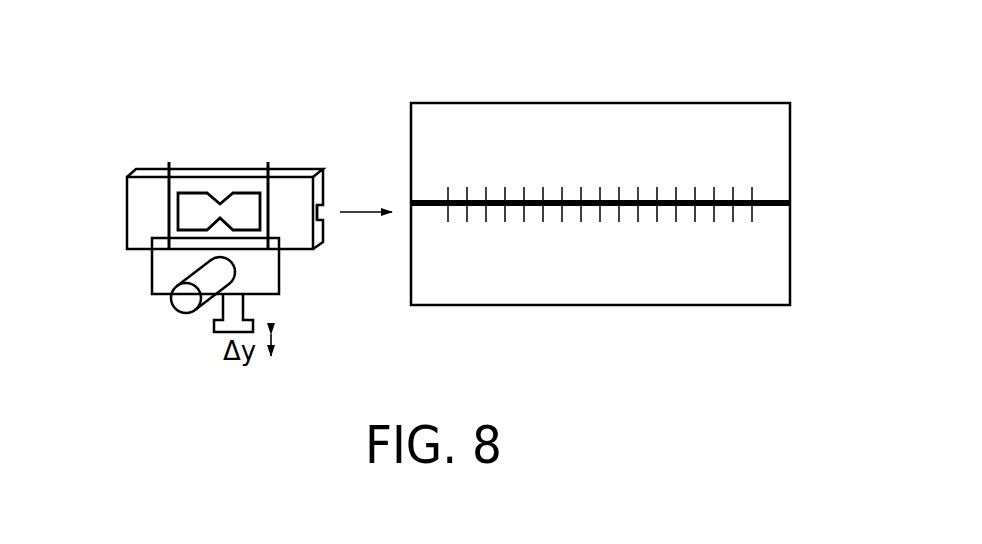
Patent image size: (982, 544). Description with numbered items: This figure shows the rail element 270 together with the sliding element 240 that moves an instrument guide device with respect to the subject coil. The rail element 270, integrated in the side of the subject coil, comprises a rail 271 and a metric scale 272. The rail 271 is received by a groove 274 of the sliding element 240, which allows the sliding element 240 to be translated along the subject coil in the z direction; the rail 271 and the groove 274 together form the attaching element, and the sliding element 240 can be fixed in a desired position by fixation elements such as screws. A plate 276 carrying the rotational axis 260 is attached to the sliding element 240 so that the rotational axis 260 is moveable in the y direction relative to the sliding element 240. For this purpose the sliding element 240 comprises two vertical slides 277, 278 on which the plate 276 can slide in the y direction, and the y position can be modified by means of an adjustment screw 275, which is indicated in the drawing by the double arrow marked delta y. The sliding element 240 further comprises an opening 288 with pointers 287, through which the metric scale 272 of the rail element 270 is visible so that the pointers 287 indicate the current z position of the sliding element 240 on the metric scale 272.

The sliding element 240 is at (205, 167).
The vertical slide 277 is at (168, 162).
The vertical slide 278 is at (268, 162).
The opening 288 is at (203, 207).
The pointers 287 is at (236, 207).
The groove 274 is at (324, 207).
The plate 276 is at (279, 275).
The adjustment screw 275 is at (243, 310).
The rotational axis 260 is at (187, 302).
The rail element 270 is at (766, 88).
The rail 271 is at (768, 206).
The metric scale 272 is at (536, 230).